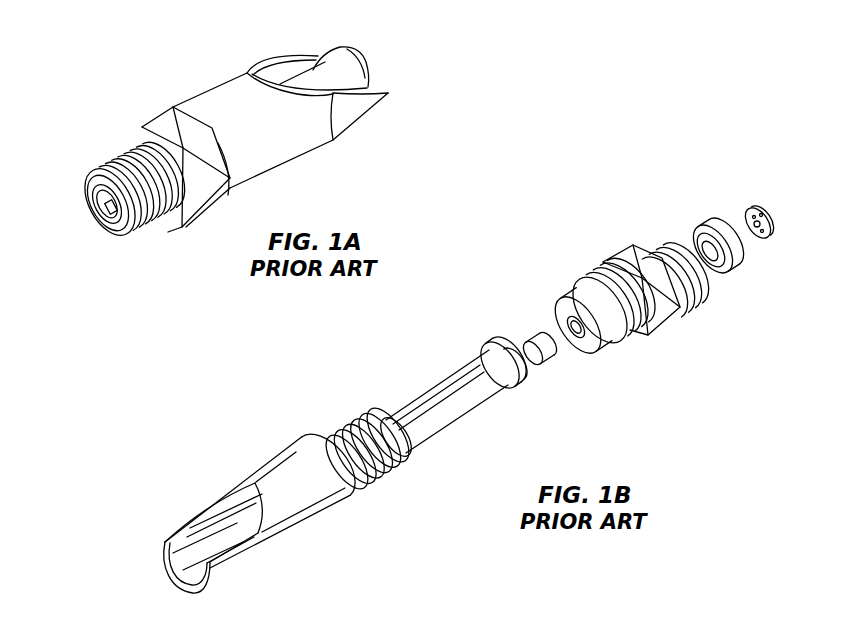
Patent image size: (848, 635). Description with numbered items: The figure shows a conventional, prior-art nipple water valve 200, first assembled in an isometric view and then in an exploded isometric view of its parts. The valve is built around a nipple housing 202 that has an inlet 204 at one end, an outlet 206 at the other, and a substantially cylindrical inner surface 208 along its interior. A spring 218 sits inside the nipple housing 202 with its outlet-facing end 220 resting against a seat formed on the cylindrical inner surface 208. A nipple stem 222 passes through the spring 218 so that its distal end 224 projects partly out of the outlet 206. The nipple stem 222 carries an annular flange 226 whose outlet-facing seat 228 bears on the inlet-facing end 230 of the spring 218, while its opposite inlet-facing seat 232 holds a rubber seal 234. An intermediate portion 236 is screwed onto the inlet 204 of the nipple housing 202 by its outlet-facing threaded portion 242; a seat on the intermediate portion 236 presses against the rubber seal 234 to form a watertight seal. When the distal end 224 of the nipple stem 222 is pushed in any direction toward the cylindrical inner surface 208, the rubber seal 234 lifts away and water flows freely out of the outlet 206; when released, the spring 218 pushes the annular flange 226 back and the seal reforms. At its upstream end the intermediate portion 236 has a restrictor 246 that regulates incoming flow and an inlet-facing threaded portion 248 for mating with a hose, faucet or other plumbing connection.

In FIG. 1A, the conventional nipple water valve 200 is at (128, 57).
In FIG. 1B, the conventional nipple water valve 200 is at (345, 337).
In FIG. 1A, the nipple housing 202 is at (234, 86).
In FIG. 1B, the nipple housing 202 is at (275, 473).
In FIG. 1B, the inlet 204 is at (313, 442).
In FIG. 1B, the outlet 206 is at (178, 589).
In FIG. 1B, the cylindrical inner surface 208 is at (193, 547).
In FIG. 1B, the spring 218 is at (383, 470).
In FIG. 1B, the outlet-facing end 220 is at (357, 488).
In FIG. 1A, the nipple stem 222 is at (330, 68).
In FIG. 1B, the nipple stem 222 is at (460, 387).
In FIG. 1B, the distal end 224 is at (380, 420).
In FIG. 1B, the annular flange 226 is at (521, 389).
In FIG. 1B, the outlet-facing seat 228 is at (508, 393).
In FIG. 1B, the inlet-facing end 230 is at (398, 454).
In FIG. 1B, the inlet-facing seat 232 is at (512, 338).
In FIG. 1B, the rubber seal 234 is at (550, 361).
In FIG. 1A, the intermediate portion 236 is at (197, 223).
In FIG. 1B, the intermediate portion 236 is at (655, 328).
In FIG. 1B, the outlet-facing threaded portion 242 is at (592, 278).
In FIG. 1A, the restrictor 246 is at (123, 238).
In FIG. 1B, the restrictor 246 is at (772, 238).
In FIG. 1B, the inlet-facing threaded portion 248 is at (660, 247).